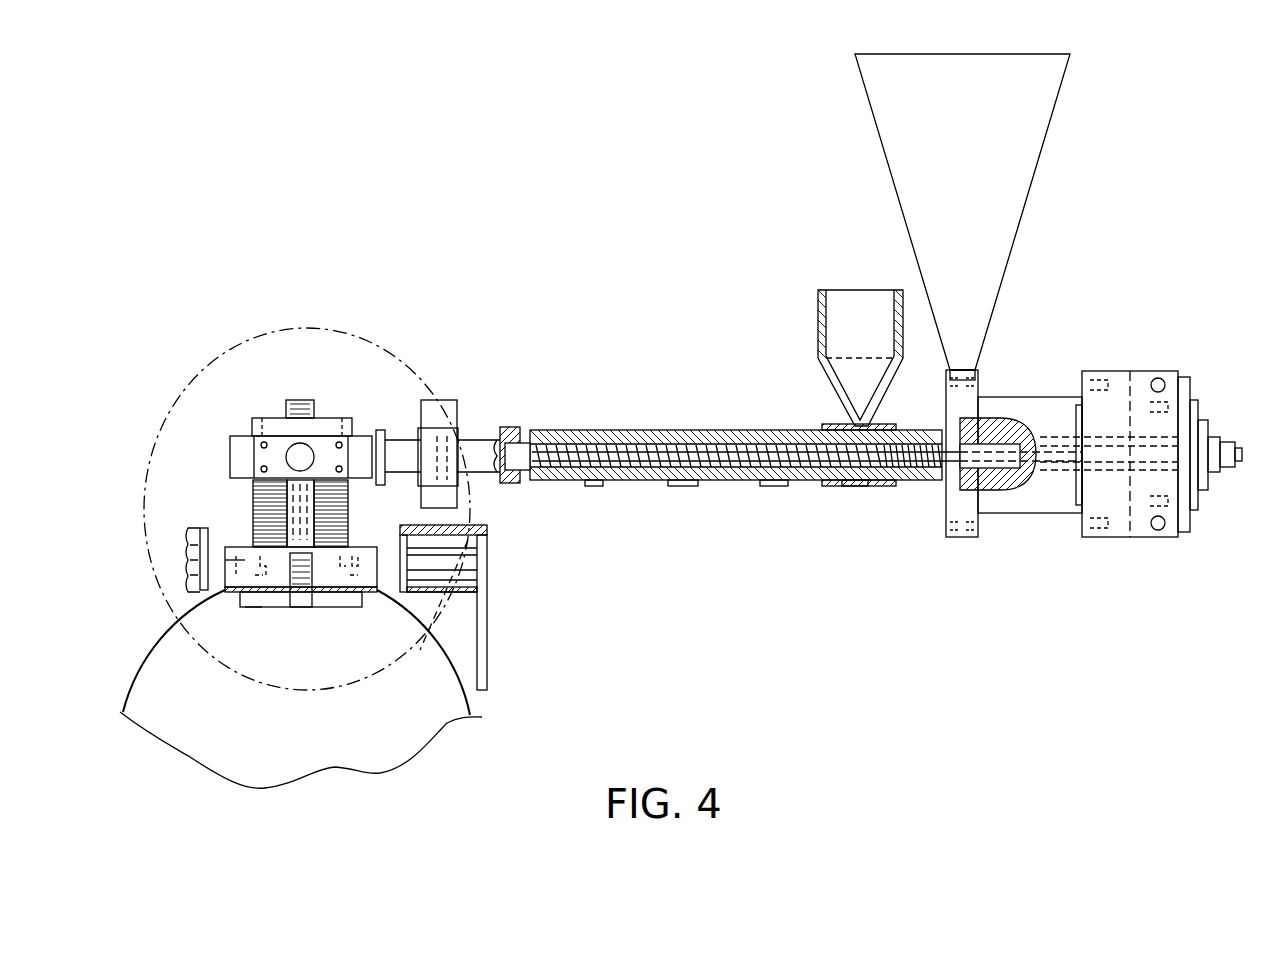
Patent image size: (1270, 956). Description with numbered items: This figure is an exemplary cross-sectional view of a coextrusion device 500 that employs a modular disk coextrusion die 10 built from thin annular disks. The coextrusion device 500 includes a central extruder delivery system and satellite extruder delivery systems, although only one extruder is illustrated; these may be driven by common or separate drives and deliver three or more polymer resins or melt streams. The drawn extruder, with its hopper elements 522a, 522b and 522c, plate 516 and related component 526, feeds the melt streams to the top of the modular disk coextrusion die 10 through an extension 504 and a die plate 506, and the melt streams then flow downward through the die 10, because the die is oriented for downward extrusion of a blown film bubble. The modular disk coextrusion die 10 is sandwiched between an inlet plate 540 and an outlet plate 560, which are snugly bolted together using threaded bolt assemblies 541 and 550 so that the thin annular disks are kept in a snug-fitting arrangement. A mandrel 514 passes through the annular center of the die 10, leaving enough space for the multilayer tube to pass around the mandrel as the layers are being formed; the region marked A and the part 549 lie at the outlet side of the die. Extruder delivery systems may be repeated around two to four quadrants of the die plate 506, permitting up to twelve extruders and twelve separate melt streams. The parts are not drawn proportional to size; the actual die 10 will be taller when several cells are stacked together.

The modular disk coextrusion die 10 is at (240, 508).
The coextrusion device 500 is at (620, 308).
The extension 504 is at (400, 450).
The die plate 506 is at (245, 447).
The mandrel 514 is at (288, 418).
The mounting plate 516 is at (357, 427).
The feed hopper 522a is at (810, 279).
The main hopper 522b is at (1037, 162).
The hopper chamber 522c is at (845, 328).
The lower block 526 is at (332, 598).
The inlet plate 540 is at (323, 420).
The threaded bolt assembly 541 is at (268, 410).
The nozzle outlet 549 is at (233, 607).
The threaded bolt assembly 550 is at (263, 605).
The outlet plate 560 is at (354, 610).
The build surface arc A is at (388, 663).